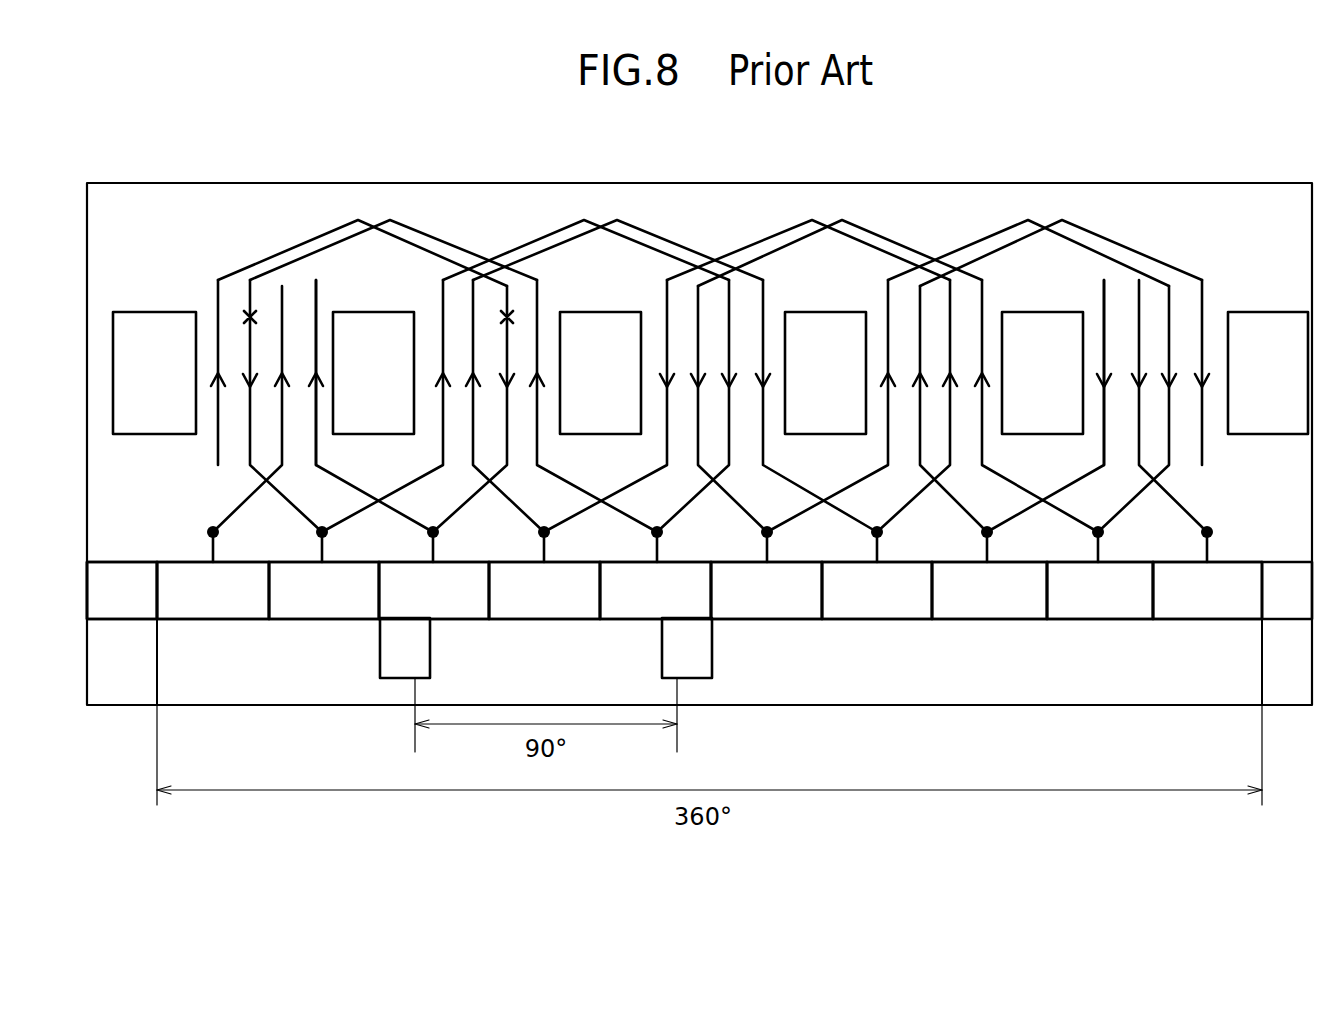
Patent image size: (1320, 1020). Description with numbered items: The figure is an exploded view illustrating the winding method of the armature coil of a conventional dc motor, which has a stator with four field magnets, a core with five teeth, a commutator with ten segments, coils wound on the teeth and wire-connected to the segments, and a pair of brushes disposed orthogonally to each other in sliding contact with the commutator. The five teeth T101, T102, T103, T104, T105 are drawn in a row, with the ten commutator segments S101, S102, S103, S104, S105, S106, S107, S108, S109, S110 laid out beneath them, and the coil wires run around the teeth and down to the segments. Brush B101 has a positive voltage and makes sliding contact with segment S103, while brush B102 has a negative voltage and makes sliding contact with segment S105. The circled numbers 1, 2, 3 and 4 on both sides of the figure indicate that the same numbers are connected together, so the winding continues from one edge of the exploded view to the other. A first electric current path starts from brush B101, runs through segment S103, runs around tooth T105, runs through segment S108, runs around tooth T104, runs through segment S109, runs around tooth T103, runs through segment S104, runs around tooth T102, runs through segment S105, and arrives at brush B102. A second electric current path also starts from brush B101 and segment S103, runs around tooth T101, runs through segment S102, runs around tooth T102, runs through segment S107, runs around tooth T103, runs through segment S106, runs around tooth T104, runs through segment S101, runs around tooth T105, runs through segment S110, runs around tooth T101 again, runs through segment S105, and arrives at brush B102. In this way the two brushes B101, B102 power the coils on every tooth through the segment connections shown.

The circled number 1 is at (1202, 465).
The circled number 2 is at (282, 286).
The circled number 3 is at (218, 465).
The circled number 4 is at (316, 280).
The tooth T101 is at (373, 373).
The tooth T102 is at (600, 373).
The tooth T103 is at (825, 373).
The tooth T104 is at (1042, 373).
The tooth T105 is at (710, 373).
The segment S101 is at (213, 590).
The segment S102 is at (324, 590).
The segment S103 is at (434, 590).
The segment S104 is at (544, 590).
The segment S105 is at (655, 590).
The segment S106 is at (766, 590).
The segment S107 is at (877, 590).
The segment S108 is at (989, 590).
The segment S109 is at (1100, 590).
The segment S110 is at (674, 590).
The brush B101 is at (380, 648).
The brush B102 is at (662, 642).